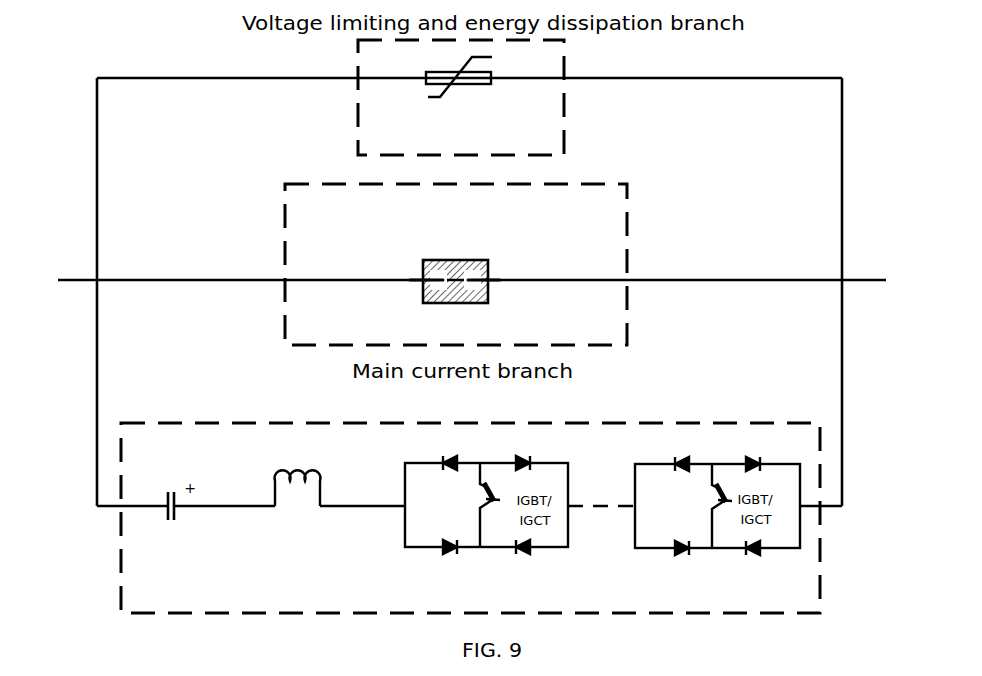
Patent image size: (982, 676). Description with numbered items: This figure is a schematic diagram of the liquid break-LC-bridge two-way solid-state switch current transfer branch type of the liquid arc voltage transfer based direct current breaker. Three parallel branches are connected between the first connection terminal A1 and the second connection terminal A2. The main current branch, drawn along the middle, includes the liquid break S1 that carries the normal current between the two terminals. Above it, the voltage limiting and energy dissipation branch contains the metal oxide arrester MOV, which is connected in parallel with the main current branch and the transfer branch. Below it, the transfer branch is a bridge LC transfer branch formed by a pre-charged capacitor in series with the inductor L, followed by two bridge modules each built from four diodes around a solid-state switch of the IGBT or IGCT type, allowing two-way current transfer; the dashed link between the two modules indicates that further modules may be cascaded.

The first connection terminal A1 is at (38, 280).
The second connection terminal A2 is at (906, 280).
The metal oxide arrester MOV is at (461, 97).
The liquid break S1 is at (456, 264).
The inductor of the LC transfer branch L is at (298, 502).